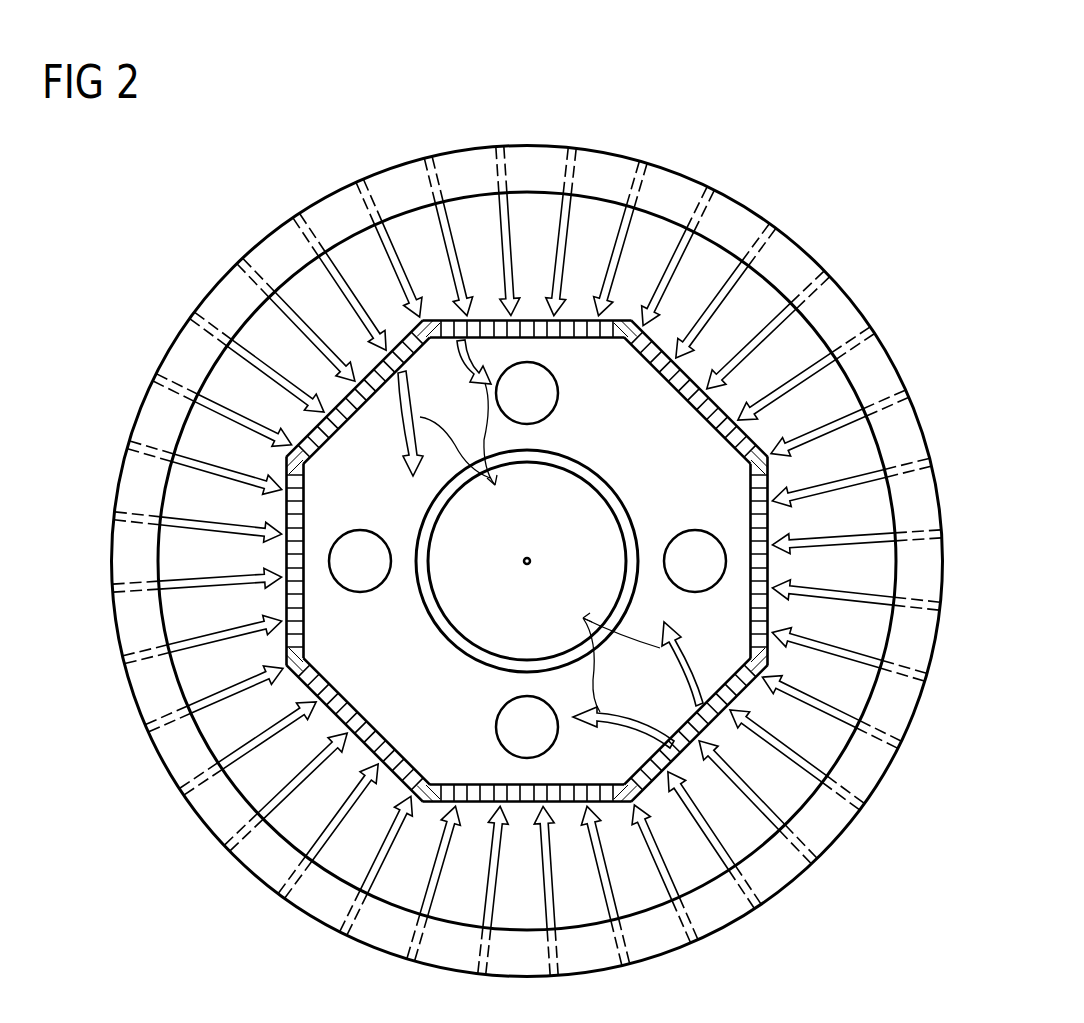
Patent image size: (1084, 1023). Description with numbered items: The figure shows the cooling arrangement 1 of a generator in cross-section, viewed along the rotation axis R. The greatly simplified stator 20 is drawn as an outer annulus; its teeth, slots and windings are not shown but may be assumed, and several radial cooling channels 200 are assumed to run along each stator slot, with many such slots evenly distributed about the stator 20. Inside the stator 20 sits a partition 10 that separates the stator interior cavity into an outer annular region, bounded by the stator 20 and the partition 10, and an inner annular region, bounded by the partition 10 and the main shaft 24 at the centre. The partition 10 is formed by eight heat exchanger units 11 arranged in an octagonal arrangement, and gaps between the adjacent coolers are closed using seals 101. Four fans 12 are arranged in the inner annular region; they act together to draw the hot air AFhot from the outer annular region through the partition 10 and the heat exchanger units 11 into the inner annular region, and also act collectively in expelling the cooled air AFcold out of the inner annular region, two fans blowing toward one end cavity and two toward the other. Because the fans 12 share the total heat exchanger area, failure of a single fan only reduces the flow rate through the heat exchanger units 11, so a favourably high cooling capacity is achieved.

The cooling arrangement 1 is at (852, 163).
The partition 10 is at (768, 518).
The seals 101 is at (750, 468).
The heat exchanger units 11 is at (678, 385).
The fans 12 is at (558, 394).
The stator 20 is at (660, 185).
The radial cooling channels 200 is at (242, 287).
The main shaft 24 is at (428, 559).
The axis R is at (531, 561).
The cooled air AFcold is at (550, 544).
The hot air AFhot is at (773, 808).